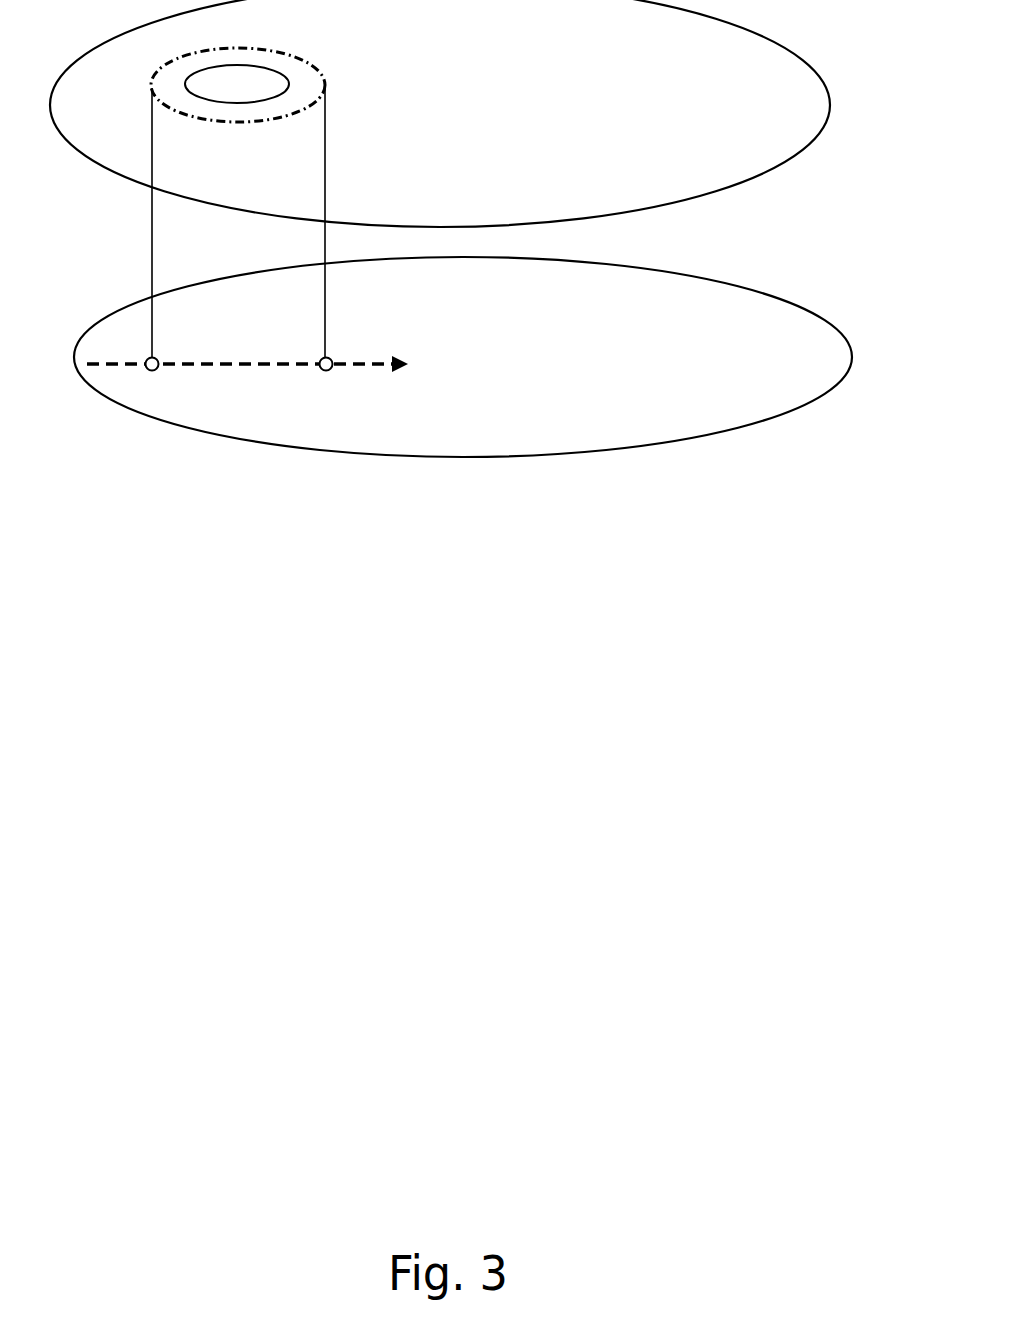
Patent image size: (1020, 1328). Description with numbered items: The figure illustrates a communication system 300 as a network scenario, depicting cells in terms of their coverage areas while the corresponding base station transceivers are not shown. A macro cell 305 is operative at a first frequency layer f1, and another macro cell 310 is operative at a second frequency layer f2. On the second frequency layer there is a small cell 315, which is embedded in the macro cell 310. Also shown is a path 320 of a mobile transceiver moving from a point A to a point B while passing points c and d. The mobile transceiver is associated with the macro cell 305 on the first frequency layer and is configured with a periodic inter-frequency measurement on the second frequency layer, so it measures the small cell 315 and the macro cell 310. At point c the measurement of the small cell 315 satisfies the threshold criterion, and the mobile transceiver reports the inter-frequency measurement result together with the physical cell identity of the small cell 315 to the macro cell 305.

The communication system 300 is at (452, 385).
The macro cell 305 is at (828, 386).
The macro cell 310 is at (829, 108).
The small cell 315 is at (189, 83).
The path 320 is at (81, 372).